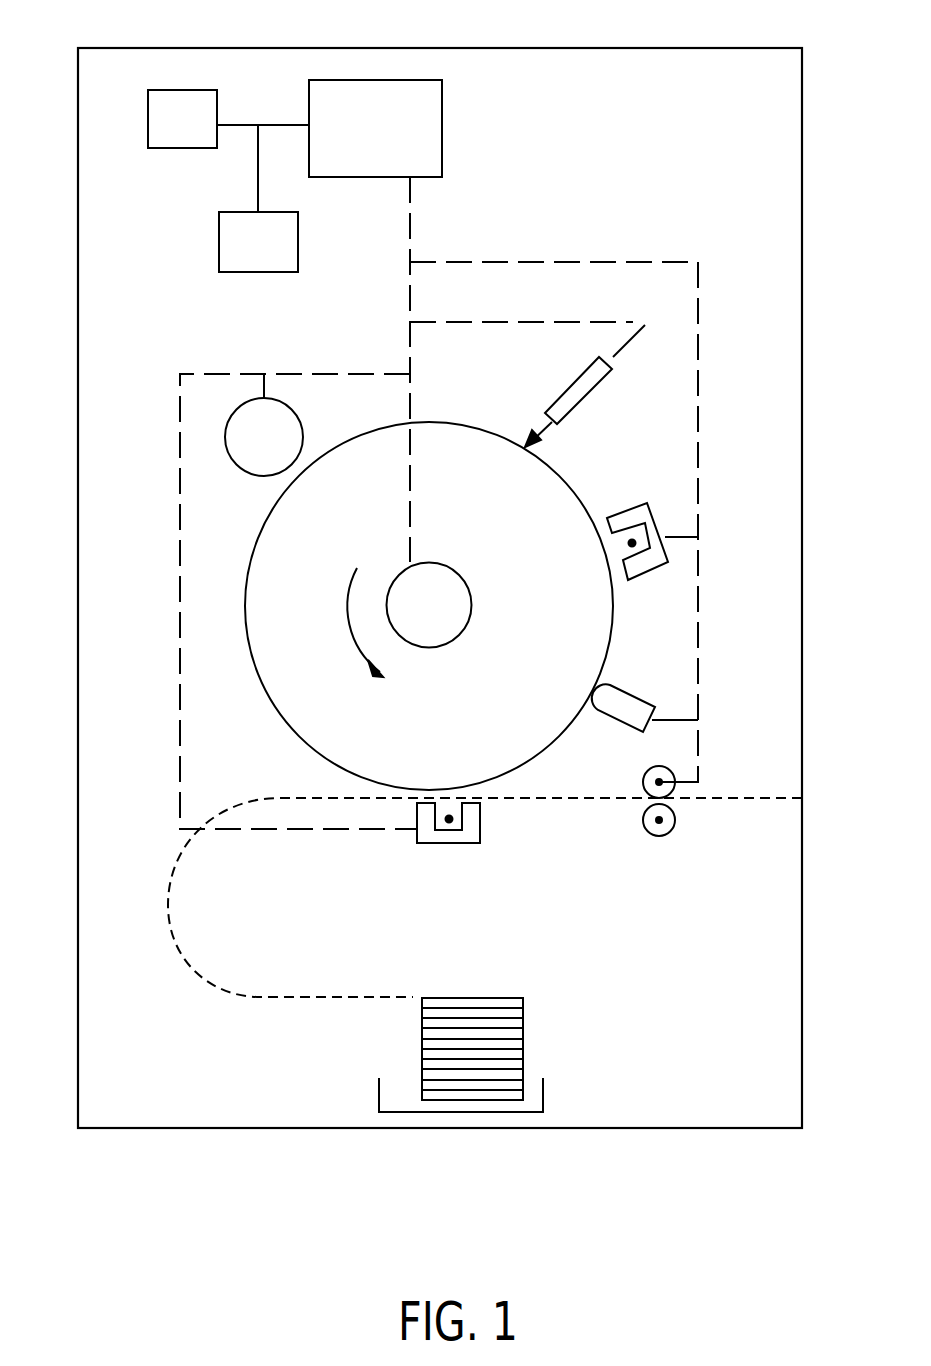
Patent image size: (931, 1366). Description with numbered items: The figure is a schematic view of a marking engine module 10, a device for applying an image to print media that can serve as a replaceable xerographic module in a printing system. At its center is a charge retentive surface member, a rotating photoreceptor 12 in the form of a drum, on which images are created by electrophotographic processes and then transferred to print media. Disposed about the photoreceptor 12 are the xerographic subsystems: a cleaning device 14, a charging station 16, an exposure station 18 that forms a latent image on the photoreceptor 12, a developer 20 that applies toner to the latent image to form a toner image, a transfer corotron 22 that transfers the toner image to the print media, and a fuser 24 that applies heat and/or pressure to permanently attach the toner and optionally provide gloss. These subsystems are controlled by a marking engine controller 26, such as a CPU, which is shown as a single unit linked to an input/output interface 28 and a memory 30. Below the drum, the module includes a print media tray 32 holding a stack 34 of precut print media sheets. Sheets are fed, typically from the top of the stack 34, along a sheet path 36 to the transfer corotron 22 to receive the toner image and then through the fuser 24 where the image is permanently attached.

The marking engine module 10 is at (293, 1152).
The photoreceptor 12 is at (443, 422).
The cleaning device 14 is at (640, 710).
The charging station 16 is at (657, 565).
The exposure station 18 is at (580, 393).
The developer 20 is at (292, 403).
The transfer corotron 22 is at (475, 847).
The fuser 24 is at (642, 782).
The marking engine controller 26 is at (353, 80).
The input/output interface 28 is at (182, 90).
The memory 30 is at (219, 243).
The print media tray 32 is at (543, 1083).
The stack of precut print media sheets 34 is at (523, 1022).
The sheet path 36 is at (205, 978).